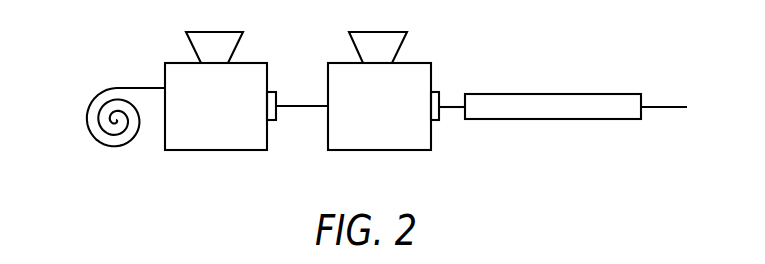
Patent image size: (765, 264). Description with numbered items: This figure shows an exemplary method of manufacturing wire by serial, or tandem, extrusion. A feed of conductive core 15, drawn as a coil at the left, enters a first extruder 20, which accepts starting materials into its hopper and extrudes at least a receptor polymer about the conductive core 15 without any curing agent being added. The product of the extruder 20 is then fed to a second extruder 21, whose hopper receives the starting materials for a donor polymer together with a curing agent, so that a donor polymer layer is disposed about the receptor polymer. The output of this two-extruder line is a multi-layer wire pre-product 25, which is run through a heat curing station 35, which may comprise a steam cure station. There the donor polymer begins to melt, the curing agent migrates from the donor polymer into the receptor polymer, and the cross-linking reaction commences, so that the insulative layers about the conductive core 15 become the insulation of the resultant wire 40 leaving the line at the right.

The conductive core 15 is at (118, 152).
The extruder 20 is at (231, 116).
The extruder 21 is at (386, 116).
The multi-layer wire pre-product 25 is at (450, 106).
The curing station 35 is at (560, 119).
The resultant wire 40 is at (662, 107).